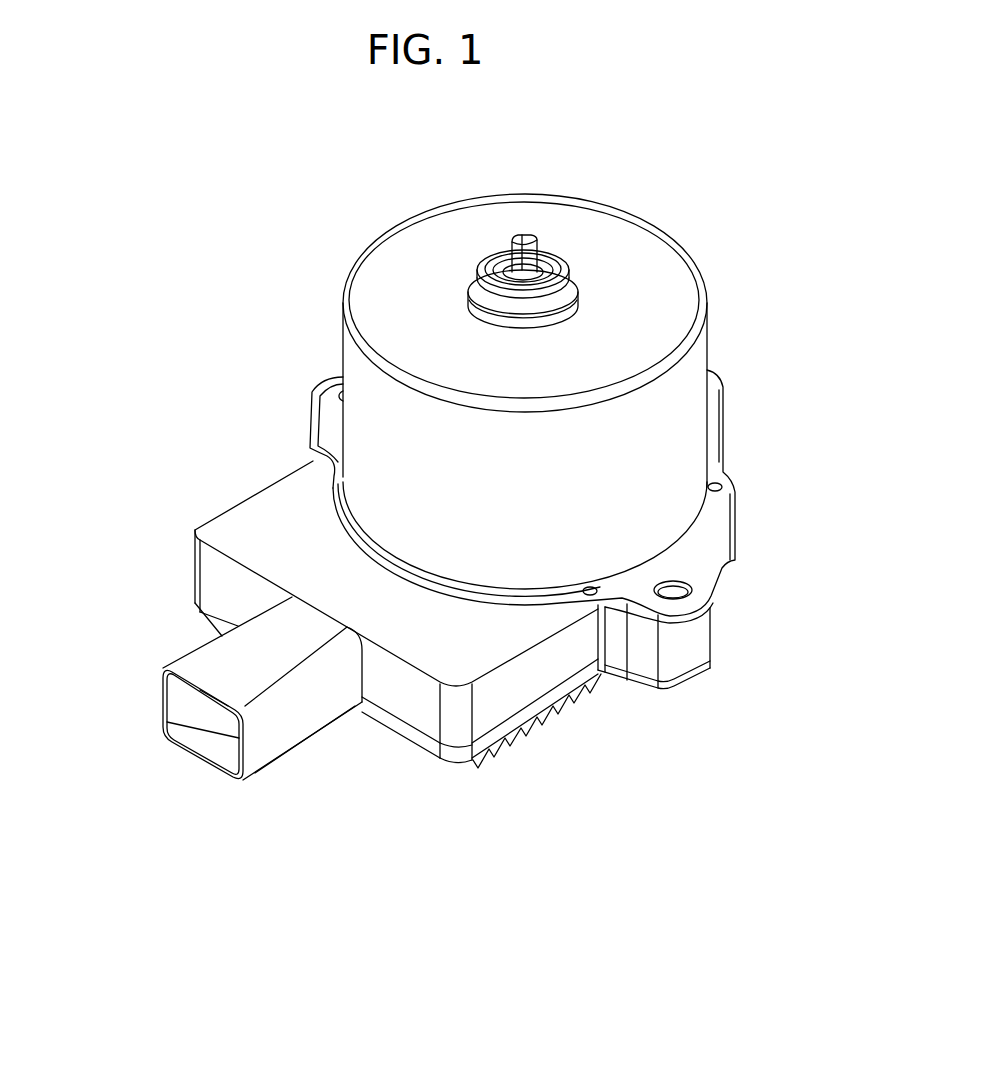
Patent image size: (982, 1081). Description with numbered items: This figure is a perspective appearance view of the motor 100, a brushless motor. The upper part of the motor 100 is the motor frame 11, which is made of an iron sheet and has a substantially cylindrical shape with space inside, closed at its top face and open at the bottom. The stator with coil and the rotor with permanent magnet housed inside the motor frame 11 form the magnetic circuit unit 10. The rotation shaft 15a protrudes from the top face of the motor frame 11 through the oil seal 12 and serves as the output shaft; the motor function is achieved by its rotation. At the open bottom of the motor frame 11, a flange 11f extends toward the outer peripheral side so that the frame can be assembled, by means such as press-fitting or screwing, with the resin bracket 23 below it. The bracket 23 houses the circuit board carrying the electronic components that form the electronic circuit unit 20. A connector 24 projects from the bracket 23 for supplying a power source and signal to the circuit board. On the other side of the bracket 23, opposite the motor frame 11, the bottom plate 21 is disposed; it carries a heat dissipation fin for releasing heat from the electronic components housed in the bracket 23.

The motor 100 is at (472, 797).
The magnetic circuit unit 10 is at (114, 209).
The motor frame 11 is at (428, 415).
The flange 11f is at (682, 558).
The oil seal 12 is at (493, 252).
The rotation shaft 15a is at (530, 252).
The electronic circuit unit 20 is at (114, 532).
The bottom plate 21 is at (543, 713).
The bracket 23 is at (245, 513).
The connector 24 is at (287, 640).